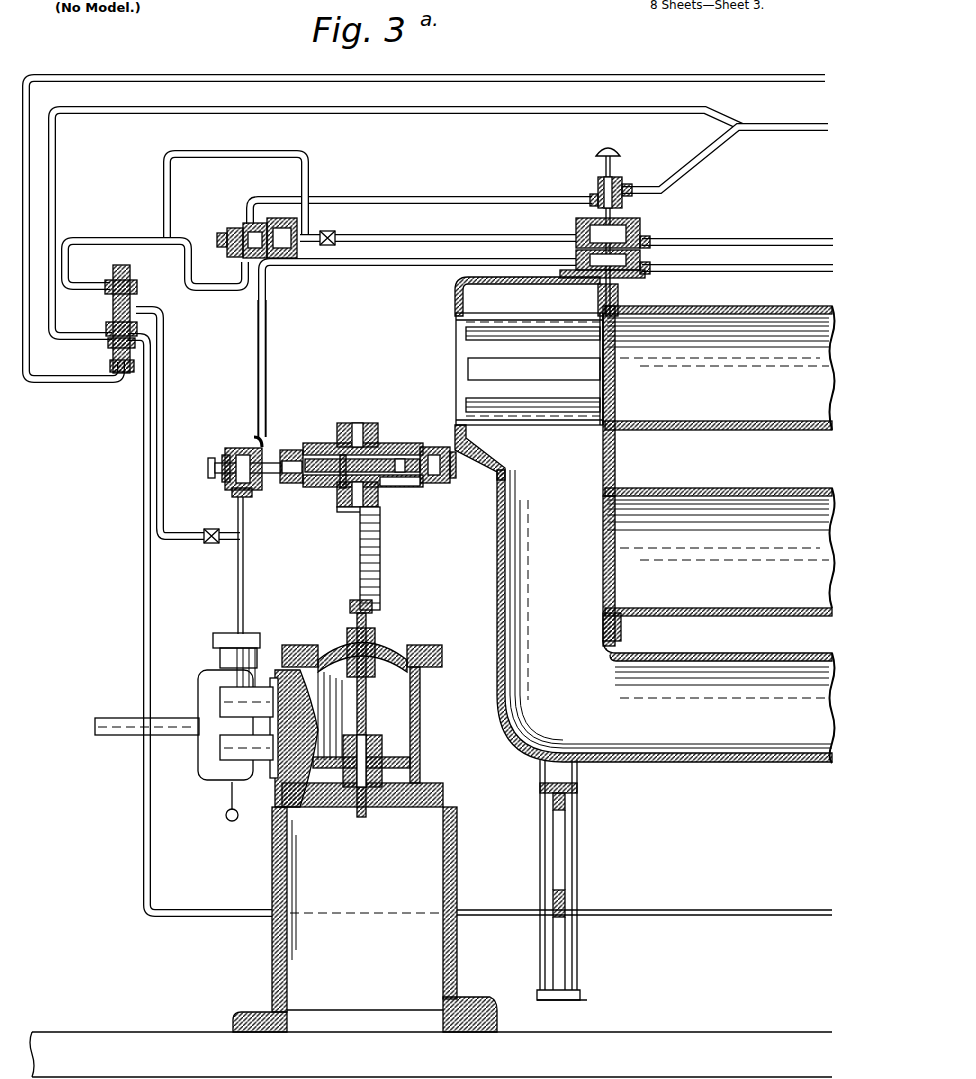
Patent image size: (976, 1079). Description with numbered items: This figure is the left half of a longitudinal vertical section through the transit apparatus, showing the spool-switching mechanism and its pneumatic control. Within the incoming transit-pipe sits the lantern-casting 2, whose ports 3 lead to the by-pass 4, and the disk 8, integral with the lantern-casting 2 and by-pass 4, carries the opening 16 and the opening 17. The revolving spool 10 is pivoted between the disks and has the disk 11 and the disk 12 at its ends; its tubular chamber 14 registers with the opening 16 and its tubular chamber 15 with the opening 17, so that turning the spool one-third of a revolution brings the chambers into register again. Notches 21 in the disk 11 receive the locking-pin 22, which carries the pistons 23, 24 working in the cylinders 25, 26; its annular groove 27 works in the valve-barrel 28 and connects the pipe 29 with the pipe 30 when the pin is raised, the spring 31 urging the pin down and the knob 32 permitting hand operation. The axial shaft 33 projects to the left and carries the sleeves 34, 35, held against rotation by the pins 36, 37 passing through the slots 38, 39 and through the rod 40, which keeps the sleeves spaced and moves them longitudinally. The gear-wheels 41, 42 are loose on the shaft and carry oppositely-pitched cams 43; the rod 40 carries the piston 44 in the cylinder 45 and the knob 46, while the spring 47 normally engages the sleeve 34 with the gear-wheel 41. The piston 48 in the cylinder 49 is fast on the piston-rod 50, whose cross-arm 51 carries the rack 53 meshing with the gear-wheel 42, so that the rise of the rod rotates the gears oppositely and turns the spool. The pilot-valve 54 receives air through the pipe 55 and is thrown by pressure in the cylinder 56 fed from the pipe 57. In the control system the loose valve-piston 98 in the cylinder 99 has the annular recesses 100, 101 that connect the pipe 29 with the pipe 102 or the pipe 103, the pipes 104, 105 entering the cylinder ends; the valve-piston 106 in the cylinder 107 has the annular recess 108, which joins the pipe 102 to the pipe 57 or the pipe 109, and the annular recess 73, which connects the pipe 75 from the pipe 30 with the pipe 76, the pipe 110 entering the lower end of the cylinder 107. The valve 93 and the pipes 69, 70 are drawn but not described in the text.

The lantern-casting 2 is at (470, 341).
The ports 3 is at (470, 377).
The by-pass 4 is at (664, 616).
The disk 8 is at (603, 466).
The revolving spool 10 is at (737, 431).
The disk 11 is at (617, 469).
The disk 12 is at (431, 942).
The tubular chamber 14 is at (705, 421).
The tubular chamber 15 is at (719, 567).
The opening 16 is at (605, 391).
The opening 17 is at (612, 557).
The notches 21 is at (619, 299).
The locking-pin 22 is at (648, 281).
The piston 23 is at (660, 243).
The piston 24 is at (650, 243).
The cylinder 25 is at (582, 280).
The cylinder 26 is at (576, 236).
The annular groove 27 is at (597, 192).
The valve-barrel 28 is at (626, 184).
The pipe 29 is at (468, 201).
The pipe 30 is at (704, 158).
The spring 31 is at (622, 232).
The knob 32 is at (605, 147).
The axial shaft 33 is at (446, 484).
The sleeve 34 is at (322, 443).
The sleeve 35 is at (407, 444).
The pin 36 is at (300, 452).
The pin 37 is at (428, 448).
The slot 38 is at (300, 486).
The slot 39 is at (396, 486).
The rod 40 is at (266, 489).
The gear-wheel 41 is at (346, 424).
The gear-wheel 42 is at (362, 424).
The cams 43 is at (341, 490).
The piston 44 is at (252, 450).
The cylinder 45 is at (231, 489).
The knob 46 is at (208, 467).
The spring 47 is at (238, 446).
The piston 48 is at (415, 760).
The cylinder 49 is at (421, 711).
The piston-rod 50 is at (368, 622).
The cross-arm 51 is at (350, 607).
The rack 53 is at (381, 576).
The pilot-valve 54 is at (198, 757).
The pipe 55 is at (130, 736).
The cylinder 56 is at (220, 657).
The pipe 57 is at (157, 491).
The pipe 69 is at (770, 242).
The pipe 70 is at (737, 281).
The annular recess 73 is at (118, 355).
The pipe 75 is at (394, 116).
The pipe 76 is at (141, 596).
The valve 93 is at (333, 233).
The loose valve-piston 98 is at (237, 230).
The cylinder 99 is at (226, 236).
The annular recess 100 is at (252, 226).
The annular recess 101 is at (263, 218).
The pipe 102 is at (220, 292).
The pipe 103 is at (267, 333).
The pipe 104 is at (394, 241).
The pipe 105 is at (390, 267).
The valve-piston 106 is at (112, 327).
The cylinder 107 is at (110, 335).
The annular recess 108 is at (110, 297).
The pipe 109 is at (236, 155).
The pipe 110 is at (283, 81).